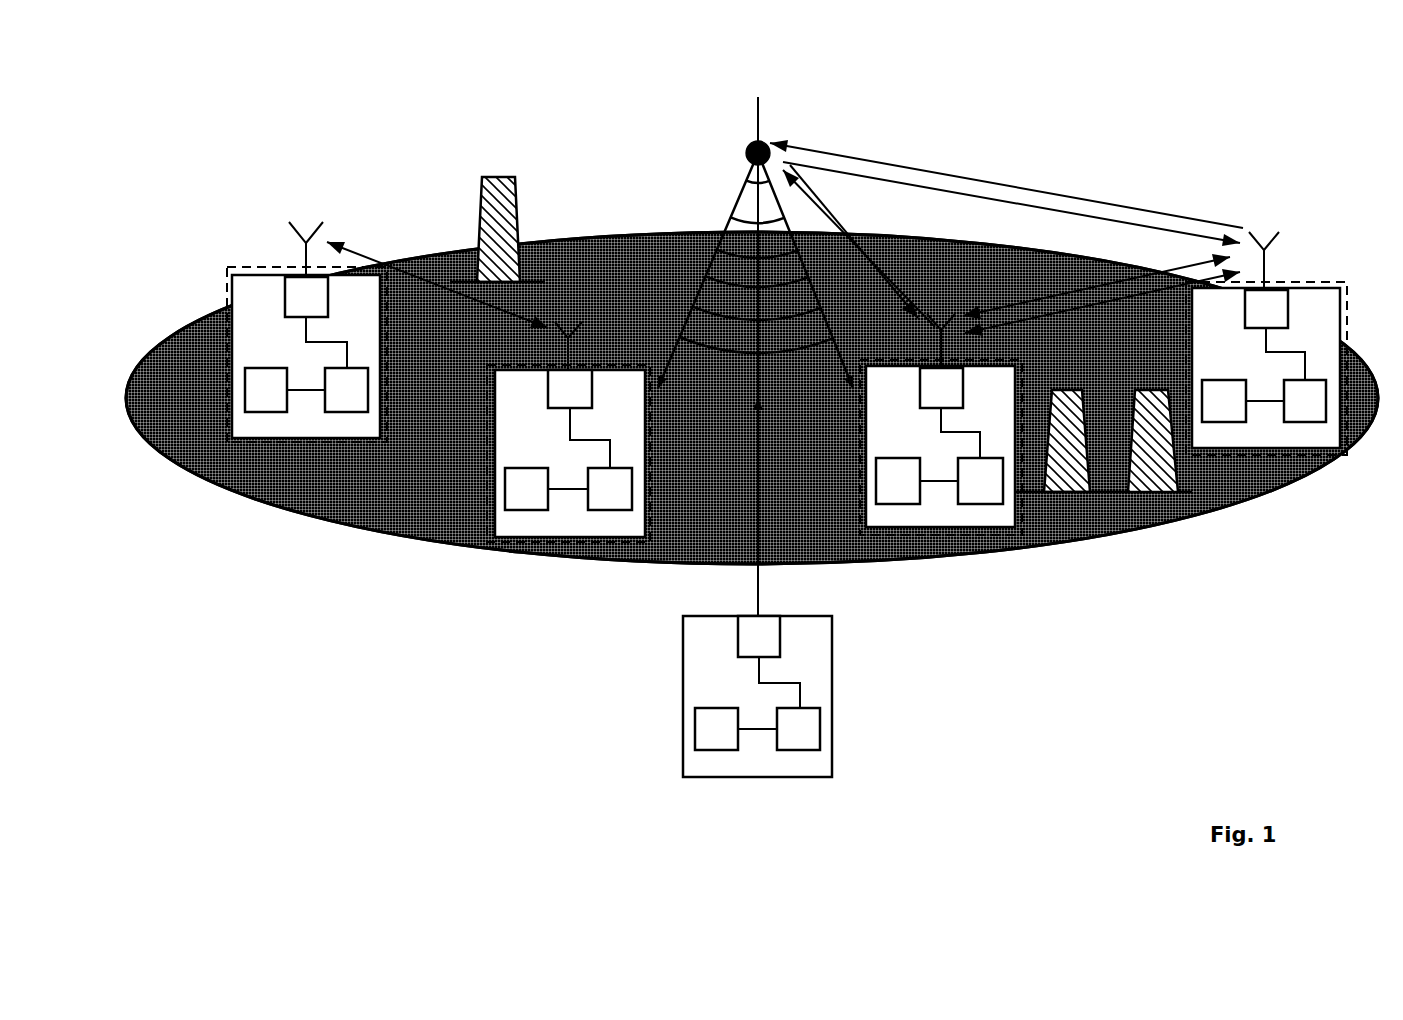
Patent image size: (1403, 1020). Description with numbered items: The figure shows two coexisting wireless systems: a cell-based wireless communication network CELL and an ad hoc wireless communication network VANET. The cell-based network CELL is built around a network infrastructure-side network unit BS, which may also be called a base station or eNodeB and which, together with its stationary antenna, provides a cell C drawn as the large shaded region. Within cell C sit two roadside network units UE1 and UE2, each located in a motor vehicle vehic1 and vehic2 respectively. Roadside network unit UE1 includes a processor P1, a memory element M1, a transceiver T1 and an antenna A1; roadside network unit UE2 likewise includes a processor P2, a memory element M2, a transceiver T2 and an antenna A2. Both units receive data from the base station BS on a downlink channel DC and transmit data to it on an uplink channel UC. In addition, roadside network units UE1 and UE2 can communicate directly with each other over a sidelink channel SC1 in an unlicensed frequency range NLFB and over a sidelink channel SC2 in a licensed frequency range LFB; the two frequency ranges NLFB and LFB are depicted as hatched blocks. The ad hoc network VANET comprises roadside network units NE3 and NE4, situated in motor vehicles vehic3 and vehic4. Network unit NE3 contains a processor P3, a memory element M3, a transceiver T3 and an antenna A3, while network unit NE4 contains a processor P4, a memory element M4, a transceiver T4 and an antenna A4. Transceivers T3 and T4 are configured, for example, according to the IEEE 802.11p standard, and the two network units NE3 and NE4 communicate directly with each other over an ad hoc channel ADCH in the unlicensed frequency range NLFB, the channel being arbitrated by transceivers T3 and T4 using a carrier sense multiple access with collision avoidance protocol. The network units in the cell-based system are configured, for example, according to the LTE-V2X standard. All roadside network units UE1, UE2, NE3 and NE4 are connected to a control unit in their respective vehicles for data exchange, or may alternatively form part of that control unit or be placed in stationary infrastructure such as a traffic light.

The cell-based wireless communication network CELL is at (1072, 130).
The cell C is at (624, 232).
The uplink channel UC is at (864, 152).
The downlink channel DC is at (960, 190).
The sidelink channel SC1 is at (1160, 262).
The sidelink channel SC2 is at (1098, 298).
The ad hoc channel ADCH is at (382, 262).
The unlicensed frequency range NLFB is at (497, 177).
The licensed frequency range LFB is at (1150, 495).
The ad hoc wireless communication network VANET is at (261, 348).
The motor vehicle vehic3 is at (261, 397).
The roadside network unit NE3 is at (257, 351).
The transceiver T3 is at (306, 297).
The memory element M3 is at (266, 390).
The processor P3 is at (346, 390).
The antenna A3 is at (300, 265).
The motor vehicle vehic4 is at (564, 483).
The roadside network unit NE4 is at (570, 495).
The transceiver T4 is at (570, 389).
The memory element M4 is at (526, 489).
The processor P4 is at (610, 489).
The antenna A4 is at (575, 355).
The motor vehicle vehic1 is at (958, 482).
The roadside network unit UE1 is at (940, 491).
The transceiver T1 is at (941, 388).
The memory element M1 is at (898, 481).
The processor P1 is at (980, 481).
The antenna A1 is at (935, 335).
The motor vehicle vehic2 is at (1269, 399).
The roadside network unit UE2 is at (1266, 427).
The transceiver T2 is at (1266, 309).
The memory element M2 is at (1224, 401).
The processor P2 is at (1305, 401).
The antenna A2 is at (1275, 265).
The network infrastructure-side network unit BS is at (805, 732).